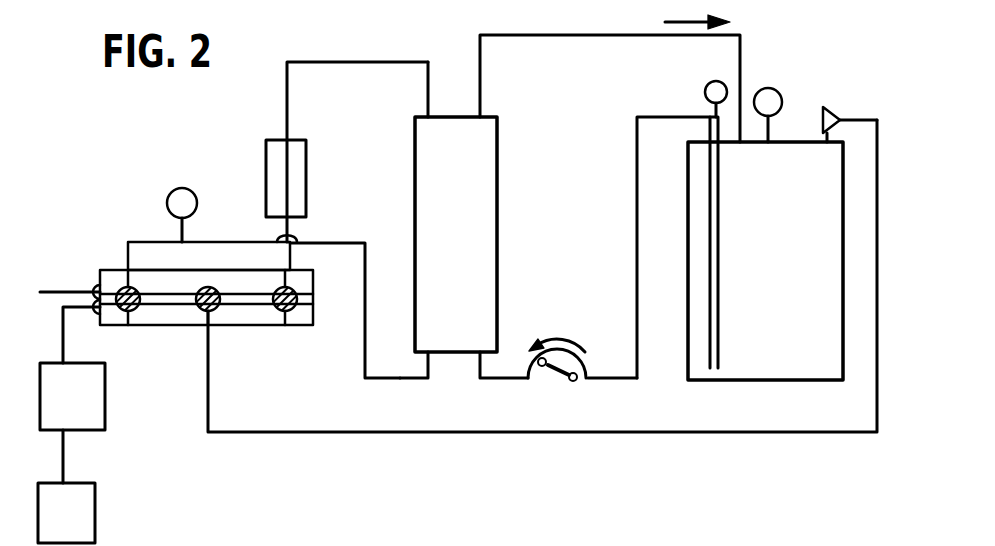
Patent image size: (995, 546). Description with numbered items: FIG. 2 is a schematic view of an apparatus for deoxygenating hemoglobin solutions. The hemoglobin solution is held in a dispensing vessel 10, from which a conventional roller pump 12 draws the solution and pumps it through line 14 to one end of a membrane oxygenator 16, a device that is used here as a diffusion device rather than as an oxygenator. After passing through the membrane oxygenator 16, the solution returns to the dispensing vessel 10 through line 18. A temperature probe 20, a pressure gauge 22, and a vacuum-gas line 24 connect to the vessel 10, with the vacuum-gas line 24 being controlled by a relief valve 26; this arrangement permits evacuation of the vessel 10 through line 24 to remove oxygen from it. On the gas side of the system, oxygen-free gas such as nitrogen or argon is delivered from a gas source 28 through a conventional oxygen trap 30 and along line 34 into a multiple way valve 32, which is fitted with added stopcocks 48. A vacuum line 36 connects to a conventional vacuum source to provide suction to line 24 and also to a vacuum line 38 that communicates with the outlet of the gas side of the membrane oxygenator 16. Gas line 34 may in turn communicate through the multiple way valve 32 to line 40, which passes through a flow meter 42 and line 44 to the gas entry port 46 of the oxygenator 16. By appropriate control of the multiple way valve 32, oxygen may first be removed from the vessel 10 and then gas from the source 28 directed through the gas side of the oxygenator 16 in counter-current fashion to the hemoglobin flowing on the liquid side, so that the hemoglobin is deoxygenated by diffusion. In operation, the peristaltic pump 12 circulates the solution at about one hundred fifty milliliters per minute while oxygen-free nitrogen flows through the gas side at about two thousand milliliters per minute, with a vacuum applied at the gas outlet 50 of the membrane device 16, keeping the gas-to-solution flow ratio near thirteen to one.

The dispensing vessel 10 is at (792, 265).
The roller pump 12 is at (550, 370).
The line 14 is at (637, 227).
The membrane oxygenator 16 is at (467, 215).
The line 18 is at (535, 35).
The temperature probe 20 is at (712, 85).
The pressure gauge 22 is at (808, 68).
The vacuum-gas line 24 is at (653, 432).
The relief valve 26 is at (835, 105).
The gas source 28 is at (93, 495).
The oxygen trap 30 is at (102, 420).
The multiple way valve 32 is at (213, 307).
The line 34 is at (63, 333).
The vacuum line 36 is at (67, 290).
The vacuum line 38 is at (217, 242).
The line 40 is at (290, 257).
The flow meter 42 is at (299, 190).
The line 44 is at (325, 62).
The gas entry port 46 is at (430, 113).
The stopcocks 48 is at (133, 312).
The gas outlet 50 is at (428, 365).